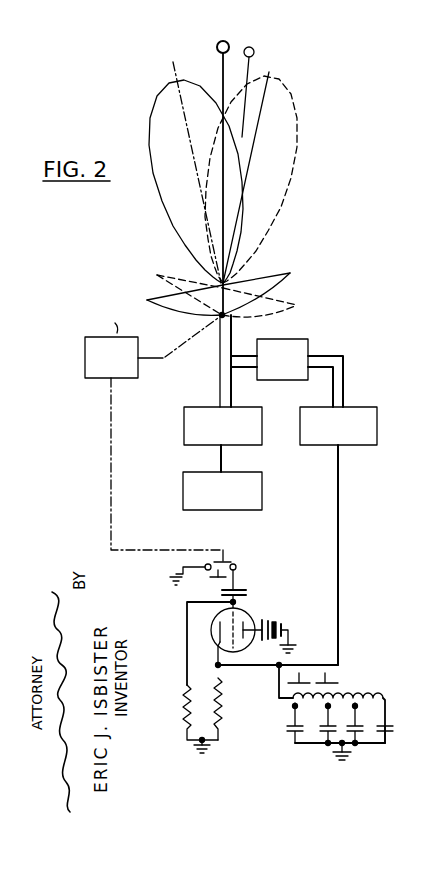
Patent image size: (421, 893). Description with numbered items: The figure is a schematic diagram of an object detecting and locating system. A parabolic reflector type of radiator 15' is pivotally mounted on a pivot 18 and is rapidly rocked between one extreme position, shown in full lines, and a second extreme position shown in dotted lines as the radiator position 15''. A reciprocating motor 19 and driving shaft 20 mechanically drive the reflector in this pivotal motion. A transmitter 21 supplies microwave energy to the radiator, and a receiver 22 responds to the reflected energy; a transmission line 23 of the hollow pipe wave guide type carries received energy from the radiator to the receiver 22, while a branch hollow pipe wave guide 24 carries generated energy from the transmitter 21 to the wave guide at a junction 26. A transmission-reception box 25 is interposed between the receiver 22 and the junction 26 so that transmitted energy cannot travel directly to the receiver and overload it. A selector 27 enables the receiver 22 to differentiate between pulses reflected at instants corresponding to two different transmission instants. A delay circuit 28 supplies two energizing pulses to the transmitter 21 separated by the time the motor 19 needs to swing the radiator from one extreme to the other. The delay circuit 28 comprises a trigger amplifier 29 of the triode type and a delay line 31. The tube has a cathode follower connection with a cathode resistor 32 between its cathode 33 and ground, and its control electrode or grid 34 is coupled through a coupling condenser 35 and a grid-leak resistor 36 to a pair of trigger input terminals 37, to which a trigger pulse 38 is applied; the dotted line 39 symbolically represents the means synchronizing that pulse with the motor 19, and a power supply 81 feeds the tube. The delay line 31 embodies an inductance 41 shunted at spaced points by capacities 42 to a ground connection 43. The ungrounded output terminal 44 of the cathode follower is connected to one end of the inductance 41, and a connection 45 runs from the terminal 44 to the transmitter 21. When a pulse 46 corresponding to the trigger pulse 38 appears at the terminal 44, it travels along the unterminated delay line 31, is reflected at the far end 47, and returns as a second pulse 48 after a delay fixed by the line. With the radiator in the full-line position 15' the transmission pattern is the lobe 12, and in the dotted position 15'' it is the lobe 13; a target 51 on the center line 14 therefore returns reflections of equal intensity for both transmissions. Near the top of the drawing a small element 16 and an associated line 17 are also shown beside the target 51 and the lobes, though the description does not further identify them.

The lobe 12 is at (162, 110).
The lobe 13 is at (292, 120).
The center line 14 is at (222, 74).
The parabolic reflector radiator 15' is at (174, 295).
The radiator in second extreme position 15'' is at (274, 295).
The antenna reflector 16 is at (253, 50).
The antenna direction line 17 is at (251, 73).
The pivot 18 is at (219, 317).
The reciprocating motor 19 is at (130, 353).
The driving shaft 20 is at (167, 355).
The transmitter 21 is at (377, 419).
The receiver 22 is at (184, 417).
The transmission line 23 is at (220, 357).
The branch hollow pipe wave guide 24 is at (342, 358).
The transmission-reception box 25 is at (296, 342).
The junction 26 is at (231, 356).
The selector 27 is at (262, 488).
The delay circuit 28 is at (321, 622).
The trigger amplifier 29 is at (256, 620).
The delay line 31 is at (345, 694).
The cathode resistor 32 is at (213, 688).
The cathode 33 is at (216, 628).
The control electrode or grid 34 is at (236, 618).
The coupling condenser 35 is at (221, 592).
The grid-leak resistor 36 is at (182, 688).
The trigger input terminals 37 is at (228, 561).
The trigger pulse 38 is at (237, 567).
The synchronizing means 39 is at (111, 497).
The inductance 41 is at (386, 704).
The capacities 42 is at (292, 731).
The ground connection 43 is at (346, 751).
The output terminal 44 is at (220, 668).
The connection 45 is at (339, 484).
The pulse 46 is at (278, 679).
The far end 47 is at (387, 720).
The second pulse 48 is at (334, 683).
The target 51 is at (218, 45).
The power supply 81 is at (282, 621).